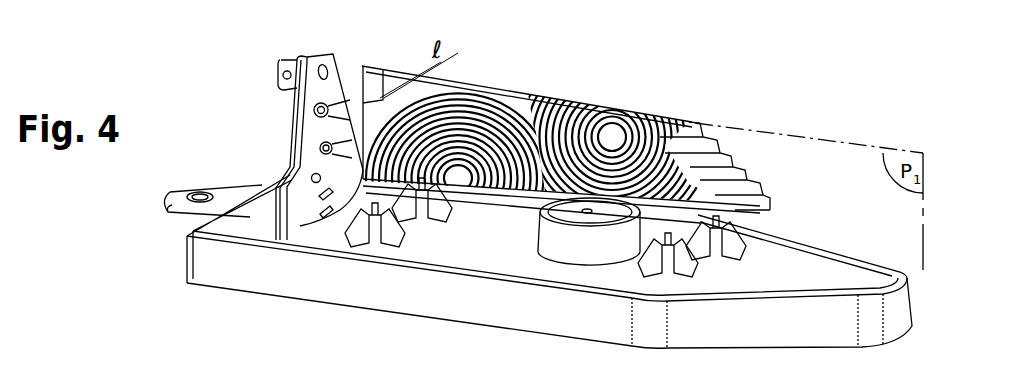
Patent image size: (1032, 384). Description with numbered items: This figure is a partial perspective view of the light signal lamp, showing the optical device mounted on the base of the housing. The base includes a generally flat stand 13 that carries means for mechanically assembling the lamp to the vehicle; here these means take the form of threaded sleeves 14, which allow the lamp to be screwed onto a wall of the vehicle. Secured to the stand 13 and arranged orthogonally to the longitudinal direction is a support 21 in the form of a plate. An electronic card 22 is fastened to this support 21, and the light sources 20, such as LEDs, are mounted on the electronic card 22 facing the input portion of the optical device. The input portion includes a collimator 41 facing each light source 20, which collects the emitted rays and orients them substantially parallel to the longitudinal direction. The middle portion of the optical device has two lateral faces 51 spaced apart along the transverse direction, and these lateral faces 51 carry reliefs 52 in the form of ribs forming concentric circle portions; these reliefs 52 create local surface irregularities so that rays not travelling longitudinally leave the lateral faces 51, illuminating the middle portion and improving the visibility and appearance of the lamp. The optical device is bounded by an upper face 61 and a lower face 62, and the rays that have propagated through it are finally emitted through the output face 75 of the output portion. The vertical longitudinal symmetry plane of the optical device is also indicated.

The stand 13 is at (805, 273).
The threaded sleeves 14 is at (673, 270).
The light source 20 is at (330, 117).
The support 21 is at (293, 130).
The electronic card 22 is at (297, 212).
The collimator 41 is at (350, 93).
The lateral faces 51 is at (515, 85).
The reliefs 52 is at (453, 130).
The upper face 61 is at (565, 90).
The lower face 62 is at (537, 182).
The output face 75 is at (660, 135).